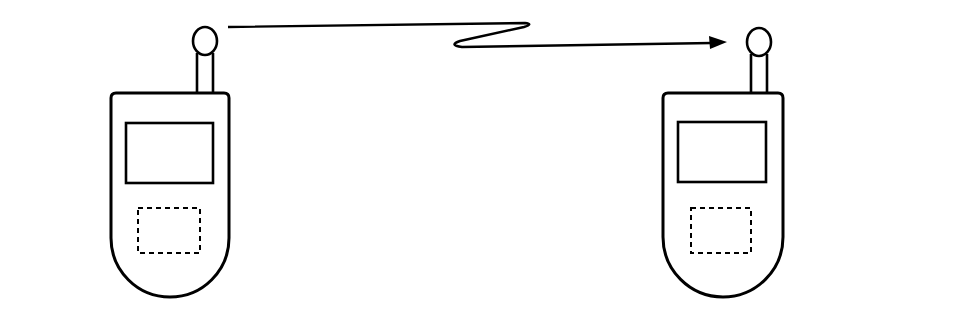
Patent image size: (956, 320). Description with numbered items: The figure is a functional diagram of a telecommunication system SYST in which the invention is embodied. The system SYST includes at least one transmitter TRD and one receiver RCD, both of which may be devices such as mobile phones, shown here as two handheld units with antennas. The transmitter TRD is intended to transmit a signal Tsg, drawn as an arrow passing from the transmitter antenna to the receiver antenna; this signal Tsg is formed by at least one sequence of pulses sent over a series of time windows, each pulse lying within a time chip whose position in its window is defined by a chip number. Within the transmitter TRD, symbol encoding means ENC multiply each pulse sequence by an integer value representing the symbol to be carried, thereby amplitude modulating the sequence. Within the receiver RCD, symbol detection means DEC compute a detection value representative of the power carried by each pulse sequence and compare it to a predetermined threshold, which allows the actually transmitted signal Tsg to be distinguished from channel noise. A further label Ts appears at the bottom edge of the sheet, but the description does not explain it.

The telecommunication system SYST is at (147, 43).
The transmitter TRD is at (111, 137).
The symbol encoding means ENC is at (169, 230).
The signal Tsg is at (477, 60).
The receiver RCD is at (783, 138).
The symbol detection means DEC is at (721, 230).
The signal Ts is at (426, 311).